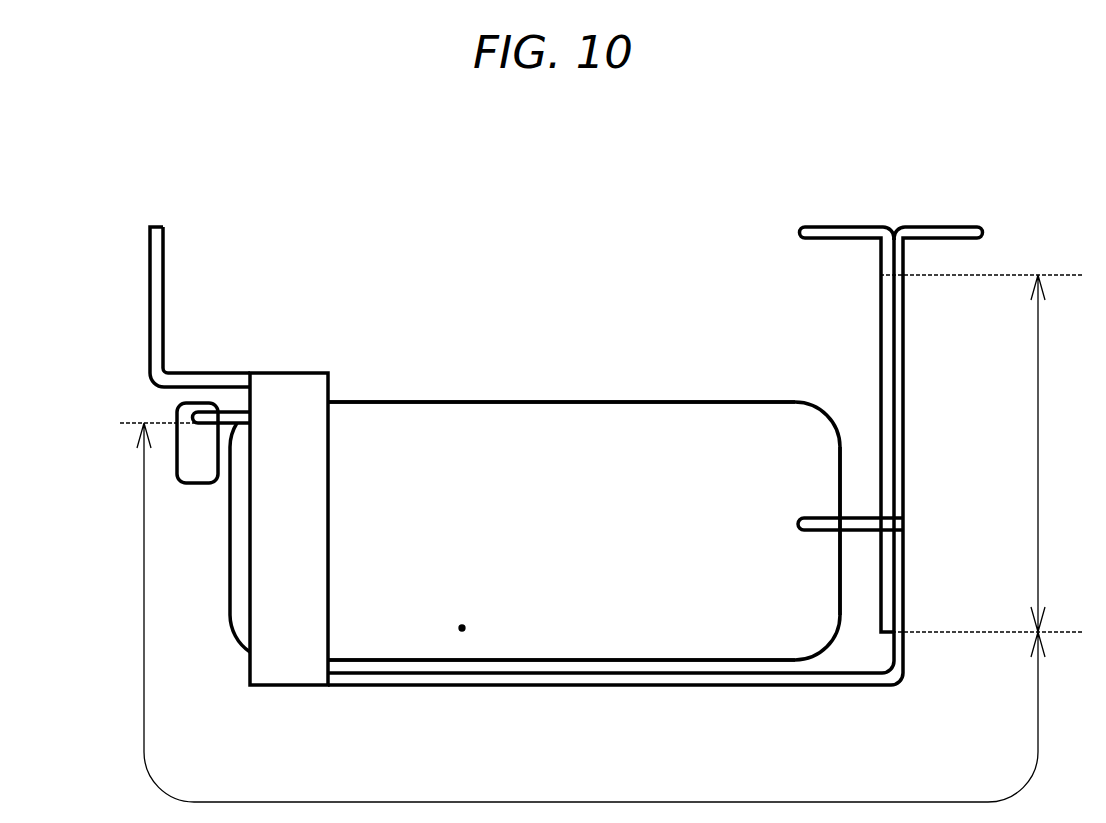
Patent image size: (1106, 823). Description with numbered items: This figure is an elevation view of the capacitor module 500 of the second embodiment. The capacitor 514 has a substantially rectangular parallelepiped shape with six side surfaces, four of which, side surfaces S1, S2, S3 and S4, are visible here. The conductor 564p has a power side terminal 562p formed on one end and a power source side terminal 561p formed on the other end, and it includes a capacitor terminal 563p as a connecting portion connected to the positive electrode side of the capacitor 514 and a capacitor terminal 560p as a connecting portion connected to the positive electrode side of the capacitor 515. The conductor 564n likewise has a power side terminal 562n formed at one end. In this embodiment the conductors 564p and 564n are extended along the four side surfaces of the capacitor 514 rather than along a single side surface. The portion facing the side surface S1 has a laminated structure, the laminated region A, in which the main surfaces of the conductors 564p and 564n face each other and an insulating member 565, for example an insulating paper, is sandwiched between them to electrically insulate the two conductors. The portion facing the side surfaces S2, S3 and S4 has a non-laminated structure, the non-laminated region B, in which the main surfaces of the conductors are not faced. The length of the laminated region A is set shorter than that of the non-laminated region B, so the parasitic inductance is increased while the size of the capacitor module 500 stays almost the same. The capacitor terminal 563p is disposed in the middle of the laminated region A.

The capacitor module 500 is at (567, 191).
The power source side terminal 561p is at (150, 283).
The capacitor terminal 560p is at (233, 412).
The capacitor 515 is at (197, 462).
The capacitor 514 is at (617, 448).
The side surface S1 is at (841, 568).
The side surface S2 is at (577, 660).
The side surface S3 is at (462, 628).
The side surface S4 is at (402, 402).
The capacitor terminal 563p is at (862, 520).
The power side terminal 562n is at (840, 233).
The power side terminal 562p is at (936, 233).
The conductor 564n is at (881, 373).
The conductor 564p is at (903, 373).
The insulating member 565 is at (895, 420).
The laminated region A is at (981, 453).
The non-laminated region B is at (582, 612).